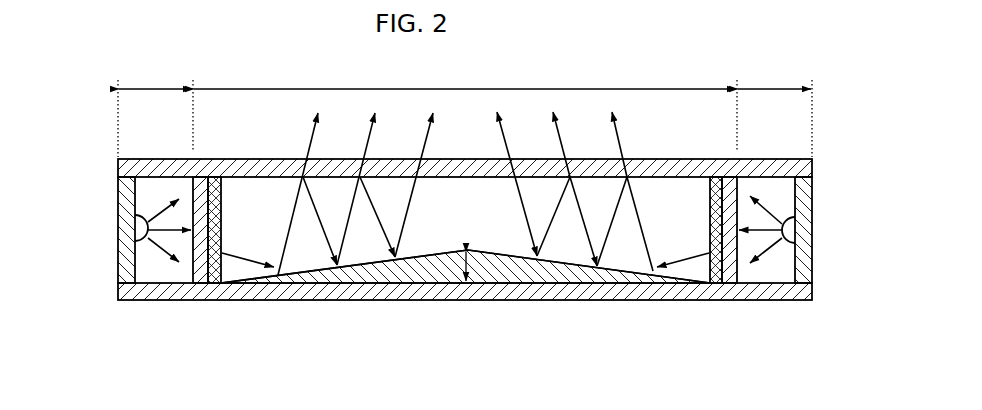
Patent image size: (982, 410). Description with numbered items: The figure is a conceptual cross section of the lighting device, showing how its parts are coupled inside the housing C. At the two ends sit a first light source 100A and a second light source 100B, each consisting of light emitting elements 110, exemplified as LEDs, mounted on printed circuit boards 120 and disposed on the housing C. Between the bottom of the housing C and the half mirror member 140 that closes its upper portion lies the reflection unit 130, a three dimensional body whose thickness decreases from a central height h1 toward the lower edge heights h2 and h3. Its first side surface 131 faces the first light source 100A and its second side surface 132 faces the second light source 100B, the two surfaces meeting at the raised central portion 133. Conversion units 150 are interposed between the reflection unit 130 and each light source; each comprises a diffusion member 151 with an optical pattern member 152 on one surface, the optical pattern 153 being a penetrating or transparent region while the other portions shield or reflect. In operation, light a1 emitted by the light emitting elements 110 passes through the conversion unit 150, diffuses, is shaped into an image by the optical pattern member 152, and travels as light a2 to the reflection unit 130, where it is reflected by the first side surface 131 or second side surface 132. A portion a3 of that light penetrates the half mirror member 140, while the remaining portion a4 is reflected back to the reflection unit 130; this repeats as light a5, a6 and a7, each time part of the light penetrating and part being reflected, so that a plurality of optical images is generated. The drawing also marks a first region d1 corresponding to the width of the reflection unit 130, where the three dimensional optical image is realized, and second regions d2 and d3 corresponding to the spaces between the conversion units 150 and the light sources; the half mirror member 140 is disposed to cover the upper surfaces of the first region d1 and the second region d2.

The first light source 100A is at (57, 233).
The second light source 100B is at (875, 234).
The light emitting element 110 is at (131, 229).
The printed circuit board 120 is at (128, 262).
The reflection unit 130 is at (465, 316).
The first side surface 131 is at (390, 302).
The second side surface 132 is at (589, 297).
The apex portion 133 is at (446, 302).
The half mirror member 140 is at (812, 165).
The conversion unit 150 is at (466, 277).
The diffusion member 151 is at (200, 302).
The optical pattern member 152 is at (226, 302).
The optical pattern 153 is at (738, 302).
The housing c is at (812, 292).
The height of central portion h1 is at (479, 266).
The height of edge portion h2 is at (268, 302).
The height of edge portion h3 is at (665, 302).
The first region d1 is at (465, 78).
The second region d2 is at (155, 78).
The region d3 is at (774, 78).
The light emitted by the first light source a1 is at (465, 229).
The light passing through plates a2 is at (465, 253).
The portion of light a3 is at (313, 192).
The remaining portion of light a4 is at (323, 221).
The light a5 is at (371, 187).
The light a6 is at (380, 217).
The light a7 is at (429, 183).